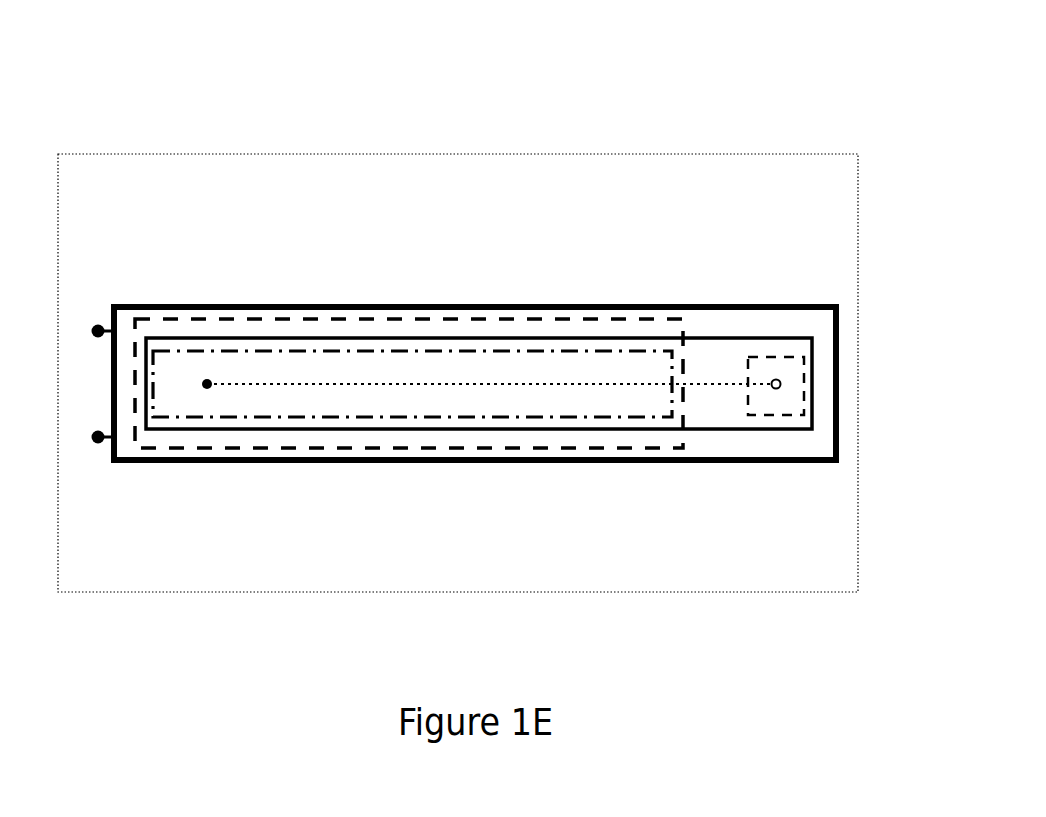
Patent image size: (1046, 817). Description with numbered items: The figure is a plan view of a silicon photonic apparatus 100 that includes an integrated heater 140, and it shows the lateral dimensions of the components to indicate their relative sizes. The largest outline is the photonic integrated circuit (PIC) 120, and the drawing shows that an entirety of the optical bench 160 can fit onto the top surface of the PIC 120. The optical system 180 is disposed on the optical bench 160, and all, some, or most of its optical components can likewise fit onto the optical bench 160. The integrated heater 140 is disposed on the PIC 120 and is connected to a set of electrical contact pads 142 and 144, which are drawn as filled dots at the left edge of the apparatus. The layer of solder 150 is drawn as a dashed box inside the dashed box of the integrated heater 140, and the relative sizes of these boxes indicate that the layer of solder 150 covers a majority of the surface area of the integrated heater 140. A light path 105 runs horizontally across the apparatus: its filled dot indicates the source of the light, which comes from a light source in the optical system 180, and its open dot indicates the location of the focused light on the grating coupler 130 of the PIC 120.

The silicon photonic apparatus 100 is at (120, 62).
The light path 105 is at (707, 383).
The photonic integrated circuit 120 is at (136, 578).
The grating coupler 130 is at (781, 386).
The integrated heater 140 is at (134, 352).
The electrical contact pad 142 is at (90, 331).
The electrical contact pad 144 is at (90, 437).
The layer of solder 150 is at (152, 373).
The optical bench 160 is at (839, 308).
The optical system 180 is at (805, 353).